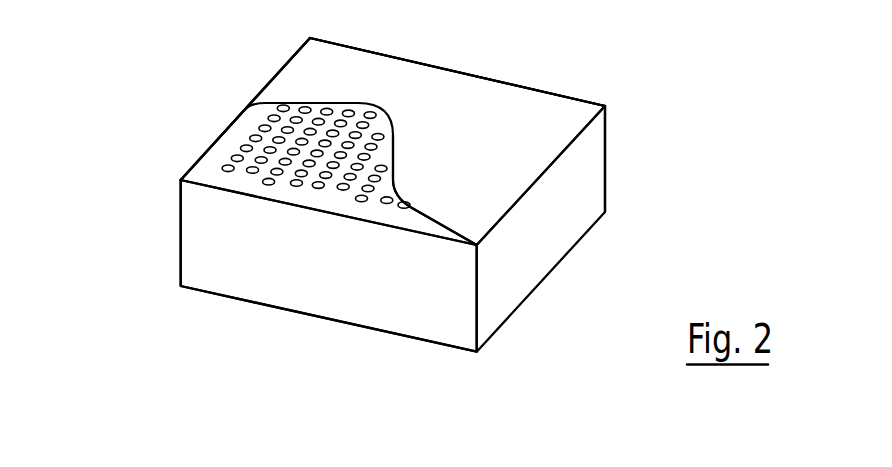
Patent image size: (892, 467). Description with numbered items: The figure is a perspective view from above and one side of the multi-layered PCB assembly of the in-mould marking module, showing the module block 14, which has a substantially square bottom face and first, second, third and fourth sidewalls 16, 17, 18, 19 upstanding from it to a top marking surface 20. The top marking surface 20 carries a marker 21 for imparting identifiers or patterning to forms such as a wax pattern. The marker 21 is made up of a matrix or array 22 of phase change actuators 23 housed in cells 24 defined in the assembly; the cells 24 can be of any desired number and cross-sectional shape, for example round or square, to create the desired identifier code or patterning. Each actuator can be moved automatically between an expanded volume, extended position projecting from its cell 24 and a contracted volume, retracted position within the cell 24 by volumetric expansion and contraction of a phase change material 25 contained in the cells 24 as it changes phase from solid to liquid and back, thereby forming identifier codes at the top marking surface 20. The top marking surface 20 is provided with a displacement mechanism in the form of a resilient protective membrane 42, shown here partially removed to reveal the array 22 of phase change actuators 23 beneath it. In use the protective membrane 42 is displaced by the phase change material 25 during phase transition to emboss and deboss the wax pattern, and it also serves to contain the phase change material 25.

The module block 14 is at (181, 268).
The first sidewall 16 is at (207, 150).
The second sidewall 17 is at (597, 172).
The third sidewall 18 is at (385, 317).
The fourth sidewall 19 is at (465, 70).
The top marking surface 20 is at (254, 117).
The marker 21 is at (207, 187).
The array 22 is at (297, 187).
The phase change actuators 23 is at (394, 215).
The cells 24 is at (253, 174).
The phase change material 25 is at (337, 200).
The protective membrane 42 is at (548, 112).